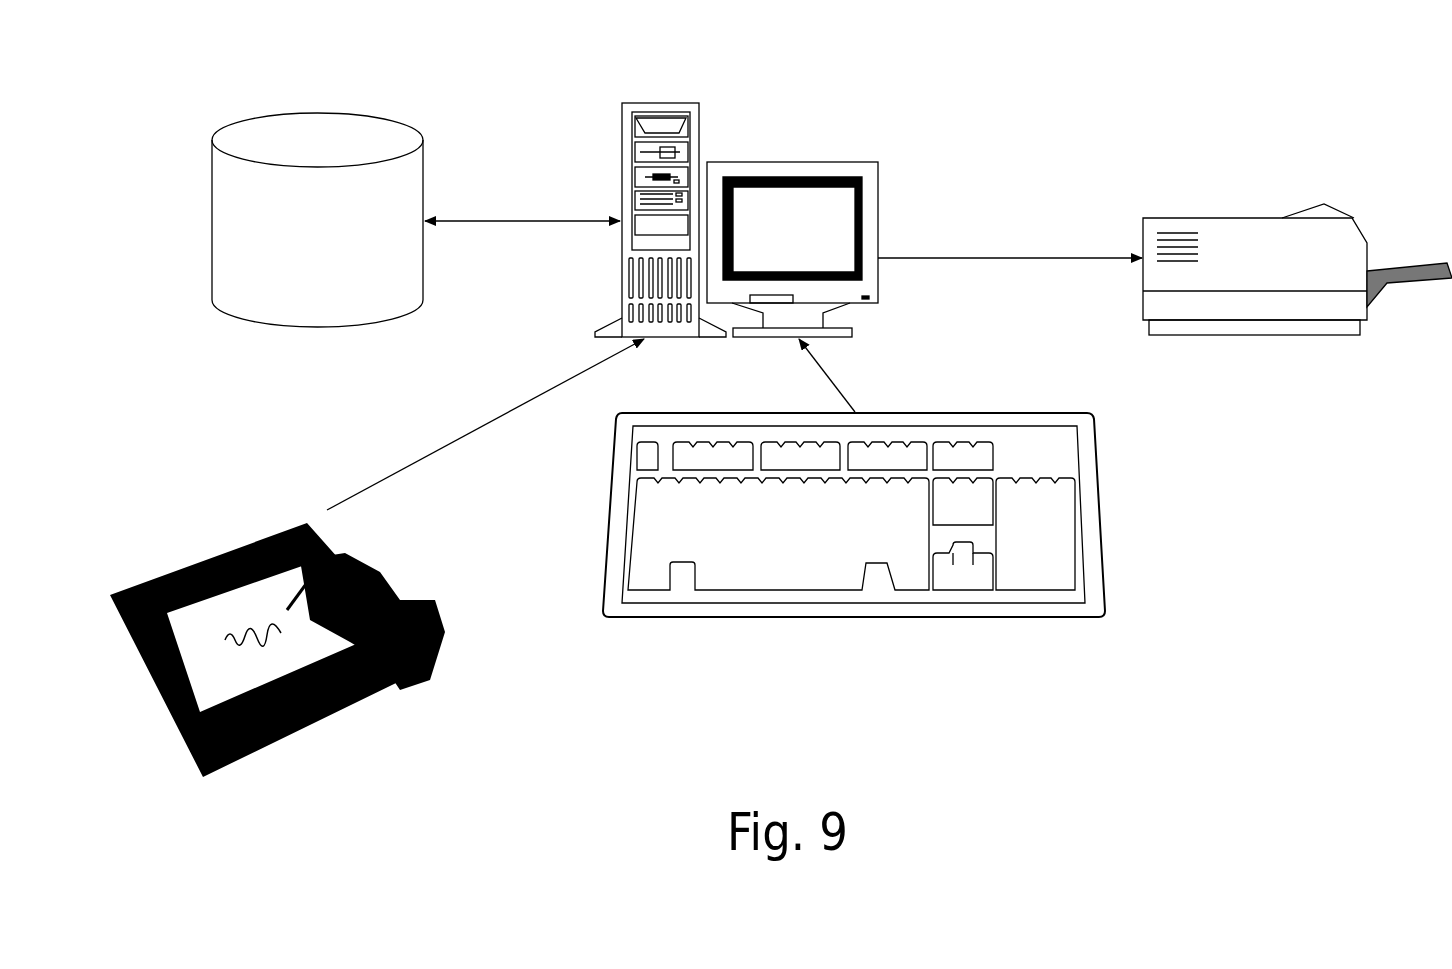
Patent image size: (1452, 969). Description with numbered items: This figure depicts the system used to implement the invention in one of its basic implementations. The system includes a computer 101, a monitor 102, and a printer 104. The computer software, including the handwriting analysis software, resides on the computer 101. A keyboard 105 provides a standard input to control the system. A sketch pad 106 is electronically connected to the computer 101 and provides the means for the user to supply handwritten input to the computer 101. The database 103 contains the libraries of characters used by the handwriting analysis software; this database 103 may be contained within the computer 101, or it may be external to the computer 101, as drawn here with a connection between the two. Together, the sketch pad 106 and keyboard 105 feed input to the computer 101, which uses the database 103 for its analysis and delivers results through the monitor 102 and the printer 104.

The computer 101 is at (670, 83).
The monitor 102 is at (803, 141).
The database 103 is at (327, 103).
The printer 104 is at (1235, 199).
The keyboard 105 is at (993, 625).
The sketch pad 106 is at (387, 702).